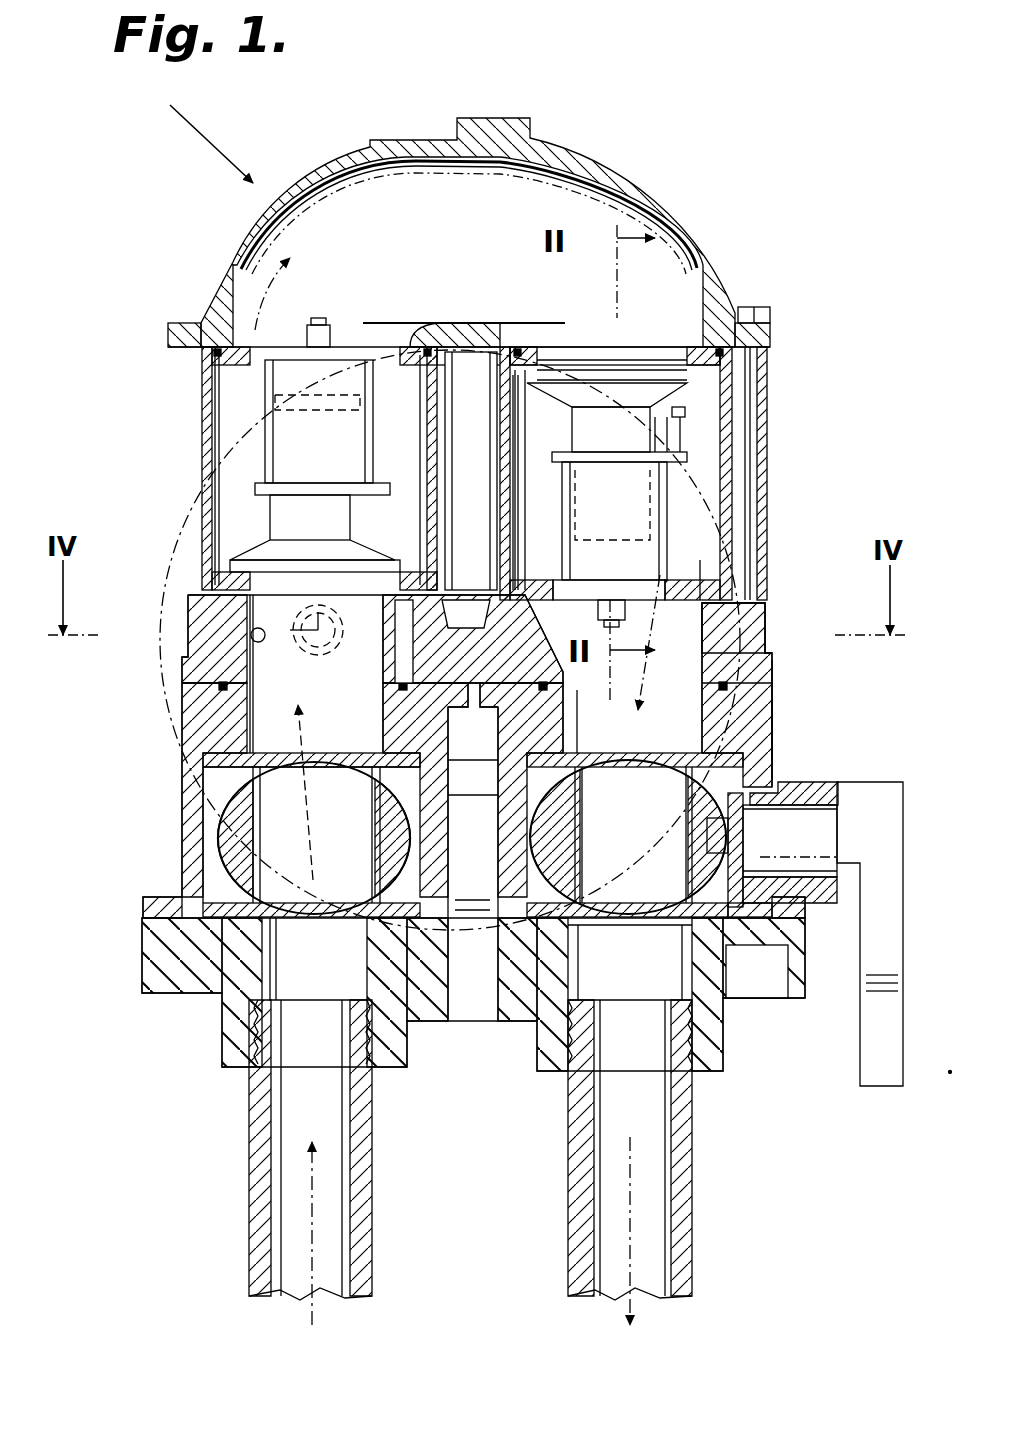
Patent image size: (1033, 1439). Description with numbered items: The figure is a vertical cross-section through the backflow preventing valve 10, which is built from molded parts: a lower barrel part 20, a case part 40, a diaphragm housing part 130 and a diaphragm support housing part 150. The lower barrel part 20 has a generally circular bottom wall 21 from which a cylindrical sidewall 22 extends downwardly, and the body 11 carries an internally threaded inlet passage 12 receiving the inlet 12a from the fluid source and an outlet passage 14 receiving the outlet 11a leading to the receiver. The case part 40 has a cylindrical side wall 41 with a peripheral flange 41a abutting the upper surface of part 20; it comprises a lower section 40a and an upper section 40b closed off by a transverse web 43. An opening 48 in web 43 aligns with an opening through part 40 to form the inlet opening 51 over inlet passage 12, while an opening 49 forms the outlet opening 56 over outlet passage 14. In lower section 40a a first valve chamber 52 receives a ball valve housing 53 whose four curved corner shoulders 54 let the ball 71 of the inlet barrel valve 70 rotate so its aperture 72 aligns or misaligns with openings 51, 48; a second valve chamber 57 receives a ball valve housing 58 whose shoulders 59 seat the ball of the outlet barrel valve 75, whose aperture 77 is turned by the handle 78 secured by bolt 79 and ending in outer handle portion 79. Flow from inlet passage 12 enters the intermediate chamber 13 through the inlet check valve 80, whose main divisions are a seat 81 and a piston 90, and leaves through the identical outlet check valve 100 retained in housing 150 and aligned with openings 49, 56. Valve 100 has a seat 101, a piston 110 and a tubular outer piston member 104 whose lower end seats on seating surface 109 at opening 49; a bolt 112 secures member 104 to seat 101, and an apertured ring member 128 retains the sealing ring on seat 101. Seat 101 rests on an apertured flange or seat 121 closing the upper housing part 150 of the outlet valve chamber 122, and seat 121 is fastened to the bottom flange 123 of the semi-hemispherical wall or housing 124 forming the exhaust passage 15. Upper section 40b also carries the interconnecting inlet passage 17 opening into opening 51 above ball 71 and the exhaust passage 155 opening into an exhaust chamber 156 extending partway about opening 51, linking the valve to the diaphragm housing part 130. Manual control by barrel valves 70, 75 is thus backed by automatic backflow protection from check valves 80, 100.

The backflow preventing valve 10 is at (197, 133).
The exhaust passage 15 is at (540, 195).
The semi-hemispherical shaped wall or housing 124 is at (655, 190).
The bottom flange 123 is at (182, 328).
The apertured flange or seat 121 is at (745, 320).
The apertured ring member 128 is at (645, 362).
The intermediate chamber 13 is at (235, 395).
The seat 101 is at (730, 380).
The piston 110 is at (500, 420).
The bolt 112 is at (665, 432).
The diaphragm support housing part 150 is at (740, 428).
The inlet check valve 80 is at (250, 505).
The piston 90 is at (315, 515).
The outlet check valve 100 is at (690, 495).
The diaphragm housing part 130 is at (165, 525).
The outlet valve chamber 122 is at (500, 492).
The tubular wall or outer piston member 104 is at (607, 505).
The seating surface 109 is at (665, 565).
The seat 81 is at (245, 580).
The transverse web 43 is at (505, 548).
The opening 49 is at (712, 572).
The opening 48 is at (240, 618).
The exhaust chamber 156 is at (440, 660).
The hollow right or outlet opening 56 is at (770, 620).
The interconnecting inlet passage 17 is at (240, 668).
The throughpassage or exhaust passage 155 is at (315, 655).
The upper section 40b is at (775, 660).
The case part 40 is at (180, 708).
The hollow left or inlet opening 51 is at (380, 738).
The corner shoulders 59 is at (705, 742).
The lower section 40a is at (775, 700).
The cylindrical side wall 41 is at (790, 740).
The corner shoulders 54 is at (215, 758).
The first valve chamber 52 is at (425, 760).
The inlet barrel valve 70 is at (205, 792).
The aperture 72 is at (378, 832).
The ball valve housing 53 is at (430, 800).
The second valve chamber 57 is at (570, 790).
The outlet barrel valve 75 is at (790, 785).
The ball 71 is at (220, 855).
The outer handle portion 79 is at (720, 828).
The handle 78 is at (810, 828).
The aperture 77 is at (690, 883).
The peripheral flange 41a is at (143, 908).
The inlet passage 12 is at (270, 972).
The ball valve housing 58 is at (700, 935).
The outlet passage 14 is at (690, 980).
The body 11 is at (178, 997).
The bottom wall 21 is at (487, 950).
The cylindrical sidewall 22 is at (815, 960).
The lower barrel part 20 is at (755, 1002).
The inlet 12a is at (248, 1238).
The outlet 11a is at (695, 1232).